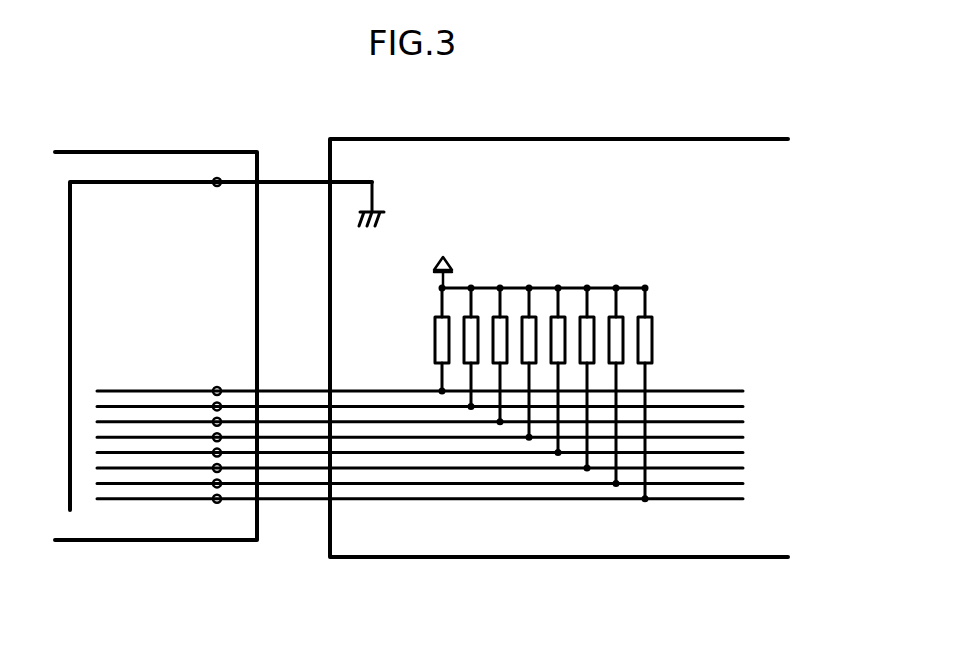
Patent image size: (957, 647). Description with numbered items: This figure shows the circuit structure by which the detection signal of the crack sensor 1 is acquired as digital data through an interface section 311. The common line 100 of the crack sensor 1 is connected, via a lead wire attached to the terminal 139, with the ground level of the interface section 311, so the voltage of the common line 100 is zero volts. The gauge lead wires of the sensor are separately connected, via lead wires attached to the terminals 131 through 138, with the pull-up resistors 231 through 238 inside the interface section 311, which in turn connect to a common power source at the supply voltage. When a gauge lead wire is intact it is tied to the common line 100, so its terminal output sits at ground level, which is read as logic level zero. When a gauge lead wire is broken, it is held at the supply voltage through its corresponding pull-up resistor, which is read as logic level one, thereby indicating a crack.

The crack sensor 1 is at (78, 152).
The common line 100 is at (73, 223).
The terminal 139 is at (219, 178).
The interface section 311 is at (477, 139).
The pull-up resistor 238 is at (444, 316).
The pull-up resistor 231 is at (652, 316).
The terminal 138 is at (219, 388).
The terminal 131 is at (219, 500).